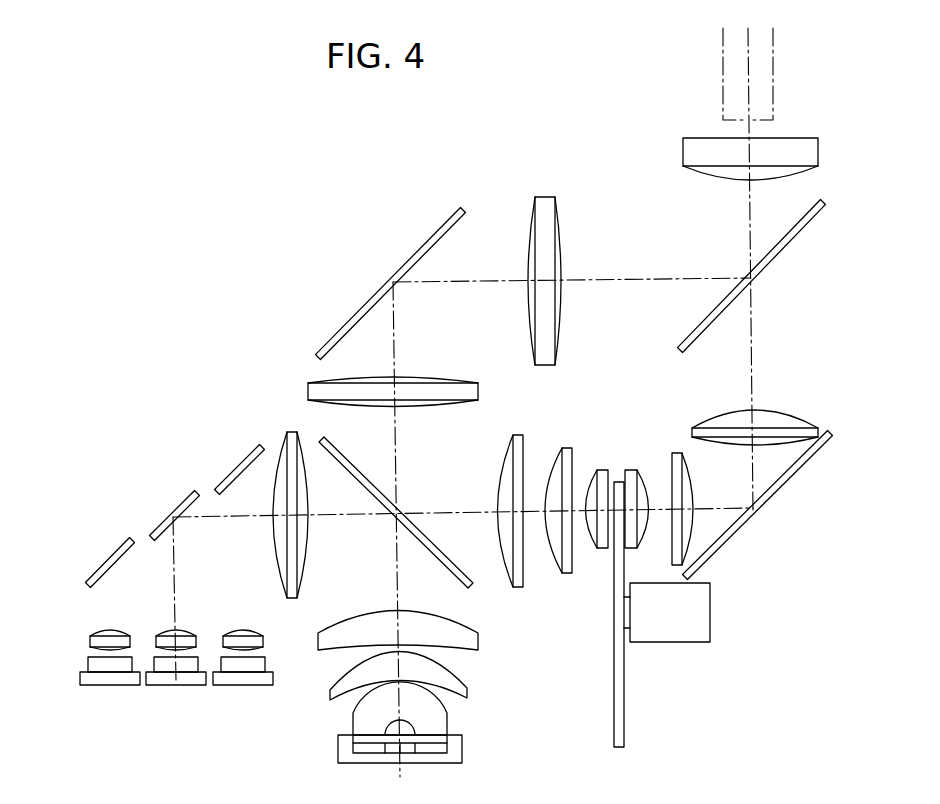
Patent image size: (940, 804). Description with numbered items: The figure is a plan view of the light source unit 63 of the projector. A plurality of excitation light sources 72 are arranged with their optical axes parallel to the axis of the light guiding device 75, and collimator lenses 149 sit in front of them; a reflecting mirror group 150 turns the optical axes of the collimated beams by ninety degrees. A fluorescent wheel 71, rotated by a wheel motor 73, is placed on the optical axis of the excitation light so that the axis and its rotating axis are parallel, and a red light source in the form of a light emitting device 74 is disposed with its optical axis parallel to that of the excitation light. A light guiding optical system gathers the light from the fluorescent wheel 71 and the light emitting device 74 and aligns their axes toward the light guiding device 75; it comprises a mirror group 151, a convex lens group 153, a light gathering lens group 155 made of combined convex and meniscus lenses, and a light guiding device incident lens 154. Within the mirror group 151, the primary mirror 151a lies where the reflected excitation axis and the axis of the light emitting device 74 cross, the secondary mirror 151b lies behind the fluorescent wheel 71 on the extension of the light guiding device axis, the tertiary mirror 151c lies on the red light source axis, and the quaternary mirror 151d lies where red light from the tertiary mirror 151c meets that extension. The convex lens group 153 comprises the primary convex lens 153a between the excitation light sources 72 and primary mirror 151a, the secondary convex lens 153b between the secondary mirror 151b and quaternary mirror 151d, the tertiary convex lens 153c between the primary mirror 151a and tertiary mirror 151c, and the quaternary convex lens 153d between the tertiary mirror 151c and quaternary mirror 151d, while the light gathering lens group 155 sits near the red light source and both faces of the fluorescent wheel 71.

The light source unit 63 is at (184, 197).
The light guiding device 75 is at (765, 78).
The light guiding device incident lens 154 is at (805, 150).
The mirror group 151 is at (576, 343).
The primary mirror 151a is at (318, 443).
The secondary mirror 151b is at (817, 453).
The tertiary mirror 151c is at (445, 222).
The quaternary mirror 151d is at (810, 218).
The convex lens group 153 is at (517, 348).
The primary convex lens 153a is at (283, 440).
The secondary convex lens 153b is at (805, 430).
The tertiary convex lens 153c is at (443, 385).
The quaternary convex lens 153d is at (547, 217).
The reflecting mirror group 150 is at (142, 507).
The collimator lenses 149 is at (90, 640).
The excitation light sources 72 is at (108, 683).
The light gathering lens group 155 is at (660, 453).
The light emitting device 74 is at (458, 750).
The wheel motor 73 is at (687, 612).
The fluorescent wheel 71 is at (628, 722).